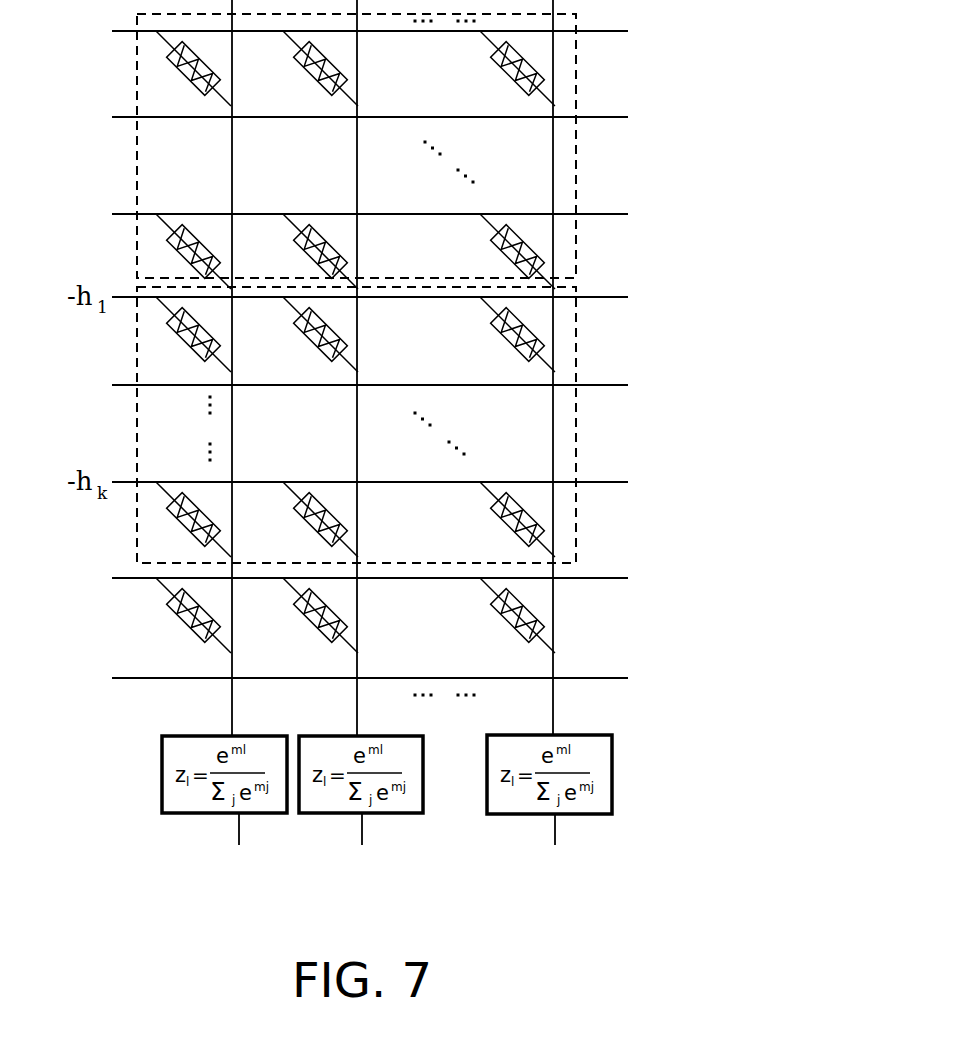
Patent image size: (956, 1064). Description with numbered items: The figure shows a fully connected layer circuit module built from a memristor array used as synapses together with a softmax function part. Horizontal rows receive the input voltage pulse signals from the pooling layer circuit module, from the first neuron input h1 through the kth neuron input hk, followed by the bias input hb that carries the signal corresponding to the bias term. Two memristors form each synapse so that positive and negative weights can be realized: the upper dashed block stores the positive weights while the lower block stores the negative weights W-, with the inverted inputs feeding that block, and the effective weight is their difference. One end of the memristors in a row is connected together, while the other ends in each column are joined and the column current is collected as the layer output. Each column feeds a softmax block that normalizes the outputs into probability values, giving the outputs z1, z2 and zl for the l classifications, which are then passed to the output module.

The input voltage pulse signal of the first neuron node h1 is at (349, 31).
The input voltage pulse signal of the kth neuron node hk is at (349, 217).
The bias input signal hb is at (351, 580).
The negative synaptic weight matrix W- is at (399, 425).
The probability output value of the first neuron node z1 is at (224, 812).
The probability output value of the second neuron node z2 is at (361, 812).
The probability output value of the lth neuron node zl is at (549, 811).